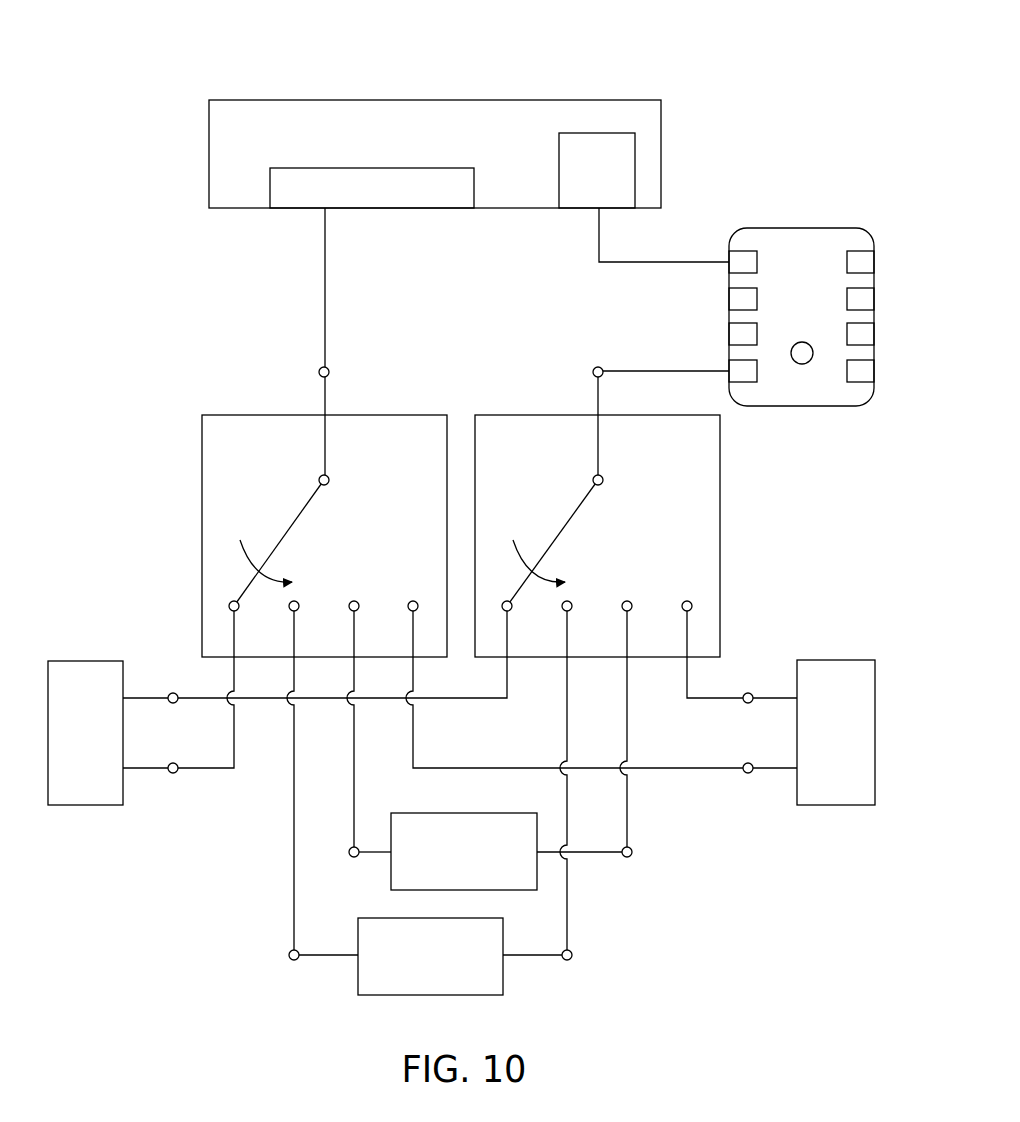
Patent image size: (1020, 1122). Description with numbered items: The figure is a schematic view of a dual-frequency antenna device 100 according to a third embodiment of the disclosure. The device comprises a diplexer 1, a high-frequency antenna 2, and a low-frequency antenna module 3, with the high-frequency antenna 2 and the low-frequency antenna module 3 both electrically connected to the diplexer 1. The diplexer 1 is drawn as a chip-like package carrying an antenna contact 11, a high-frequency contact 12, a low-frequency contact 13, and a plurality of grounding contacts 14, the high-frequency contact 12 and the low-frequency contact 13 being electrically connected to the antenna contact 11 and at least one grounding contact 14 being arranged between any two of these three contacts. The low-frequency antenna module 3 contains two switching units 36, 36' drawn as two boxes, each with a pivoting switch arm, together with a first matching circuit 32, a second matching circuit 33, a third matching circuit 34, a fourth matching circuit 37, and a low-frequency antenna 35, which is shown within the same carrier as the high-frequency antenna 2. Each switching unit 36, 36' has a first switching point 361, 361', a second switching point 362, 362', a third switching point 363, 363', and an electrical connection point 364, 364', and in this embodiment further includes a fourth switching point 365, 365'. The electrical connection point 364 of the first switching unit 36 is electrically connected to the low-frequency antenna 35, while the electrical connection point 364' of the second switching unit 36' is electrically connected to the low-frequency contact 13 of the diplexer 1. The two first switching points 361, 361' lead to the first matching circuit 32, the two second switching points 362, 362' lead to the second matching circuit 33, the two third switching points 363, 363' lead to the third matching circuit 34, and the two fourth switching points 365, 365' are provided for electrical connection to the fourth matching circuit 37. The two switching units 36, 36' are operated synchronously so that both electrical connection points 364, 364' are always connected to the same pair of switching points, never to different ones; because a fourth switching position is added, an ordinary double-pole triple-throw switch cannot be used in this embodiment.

The dual-frequency antenna device 100 is at (95, 33).
The diplexer 1 is at (806, 226).
The antenna contact 11 is at (860, 297).
The high-frequency contact 12 is at (742, 254).
The low-frequency contact 13 is at (745, 376).
The grounding contacts 14 is at (858, 258).
The high-frequency antenna 2 is at (634, 172).
The low-frequency antenna module 3 is at (182, 408).
The first matching circuit 32 is at (88, 659).
The second matching circuit 33 is at (378, 916).
The third matching circuit 34 is at (400, 811).
The low-frequency antenna 35 is at (388, 211).
The switching unit 36 is at (429, 650).
The switching unit 36' is at (496, 650).
The fourth matching circuit 37 is at (840, 658).
The first switching point 361 is at (192, 676).
The second switching point 362 is at (311, 743).
The third switching point 363 is at (365, 694).
The electrical connection point 364 is at (280, 418).
The fourth switching point 365 is at (567, 651).
The first switching point 361' is at (355, 602).
The second switching point 362' is at (584, 742).
The third switching point 363' is at (647, 693).
The electrical connection point 364' is at (550, 417).
The fourth switching point 365' is at (732, 631).